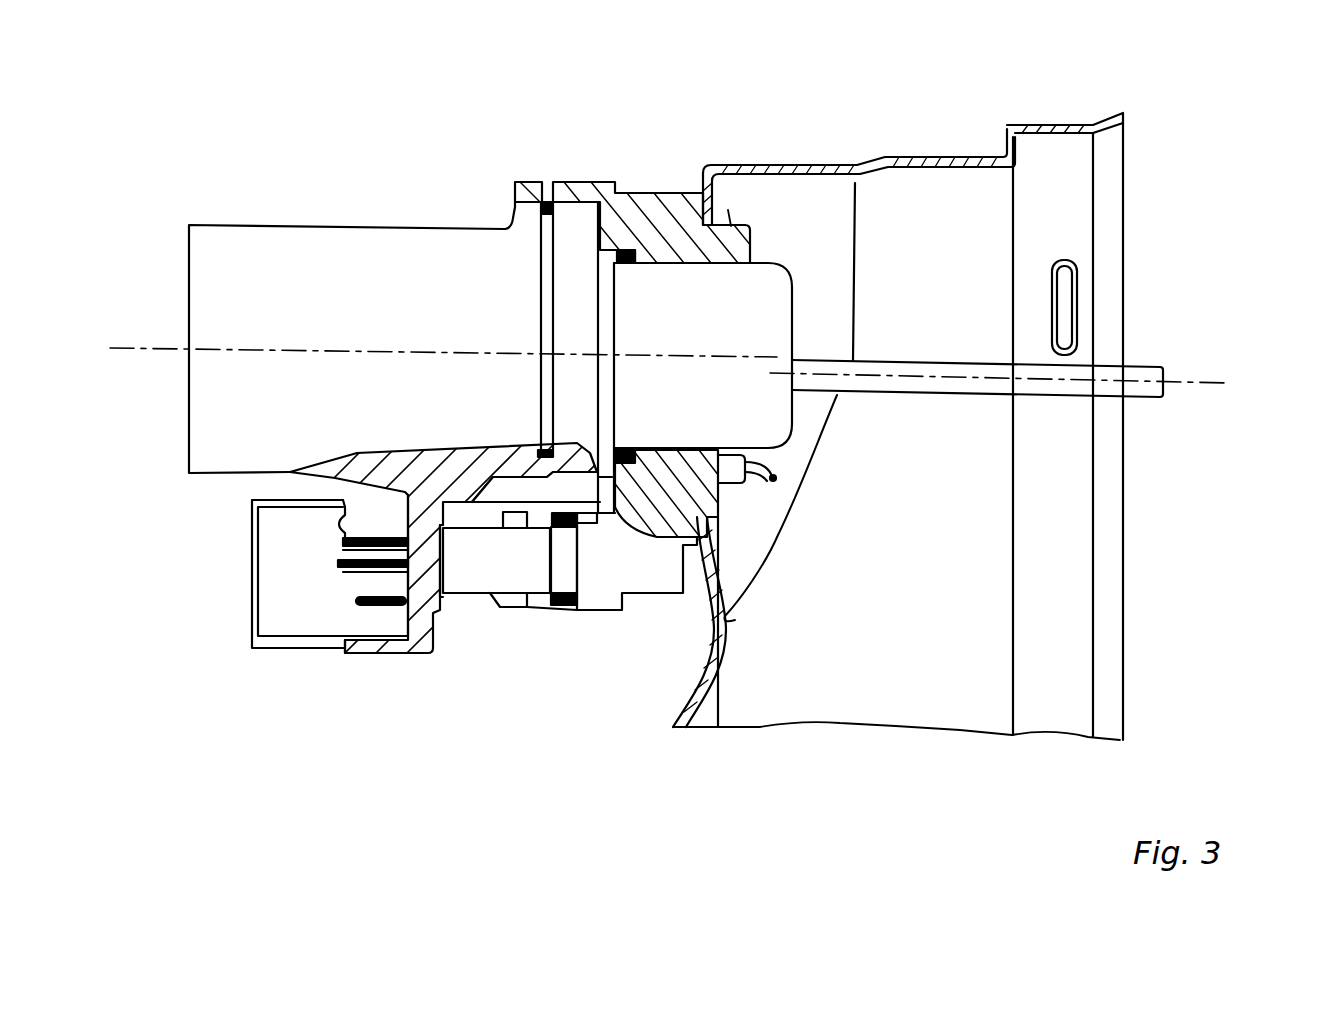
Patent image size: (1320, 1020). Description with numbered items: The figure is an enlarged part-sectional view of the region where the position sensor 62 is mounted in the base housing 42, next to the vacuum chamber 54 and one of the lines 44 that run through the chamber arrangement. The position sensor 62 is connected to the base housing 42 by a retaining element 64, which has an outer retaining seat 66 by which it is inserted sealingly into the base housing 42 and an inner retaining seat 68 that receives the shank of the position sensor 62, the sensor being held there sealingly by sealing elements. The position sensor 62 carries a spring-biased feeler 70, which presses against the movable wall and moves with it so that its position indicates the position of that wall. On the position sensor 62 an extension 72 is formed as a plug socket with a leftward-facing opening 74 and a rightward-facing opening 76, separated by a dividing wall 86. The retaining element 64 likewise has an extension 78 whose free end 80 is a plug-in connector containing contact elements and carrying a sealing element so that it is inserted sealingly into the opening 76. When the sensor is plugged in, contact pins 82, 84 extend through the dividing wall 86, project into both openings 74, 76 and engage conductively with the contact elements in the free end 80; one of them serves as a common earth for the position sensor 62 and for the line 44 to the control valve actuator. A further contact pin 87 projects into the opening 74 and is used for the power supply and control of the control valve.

The base housing 42 is at (880, 161).
The line 44 is at (782, 512).
The vacuum chamber 54 is at (1052, 225).
The position sensor 62 is at (287, 246).
The retaining element 64 is at (640, 207).
The outer retaining seat 66 is at (726, 214).
The inner retaining seat 68 is at (704, 268).
The feeler 70 is at (950, 368).
The extension 72 is at (416, 664).
The opening 74 is at (268, 606).
The opening 76 is at (517, 600).
The extension 78 is at (646, 577).
The free end 80 is at (473, 565).
The contact pin 82 is at (343, 542).
The contact pin 84 is at (343, 575).
The dividing wall 86 is at (395, 654).
The further contact pin 87 is at (367, 602).